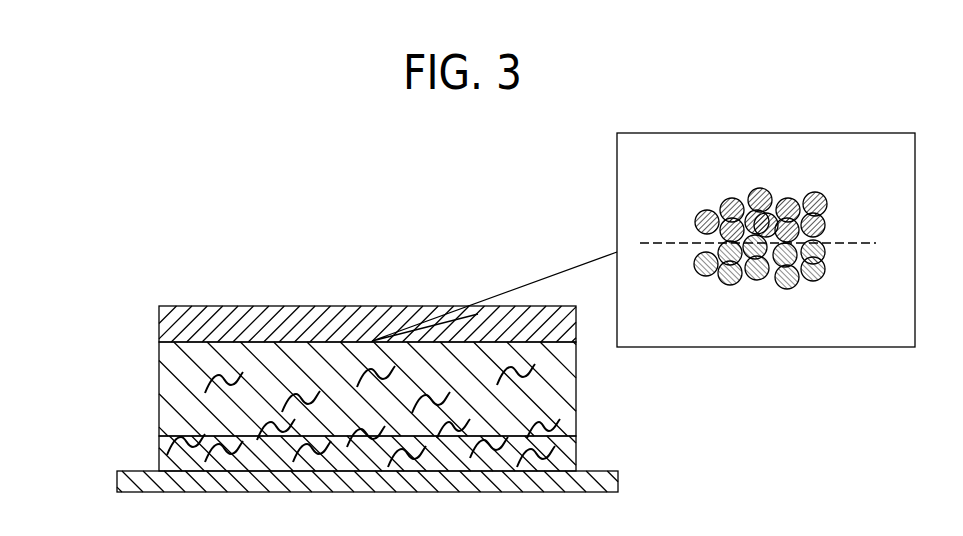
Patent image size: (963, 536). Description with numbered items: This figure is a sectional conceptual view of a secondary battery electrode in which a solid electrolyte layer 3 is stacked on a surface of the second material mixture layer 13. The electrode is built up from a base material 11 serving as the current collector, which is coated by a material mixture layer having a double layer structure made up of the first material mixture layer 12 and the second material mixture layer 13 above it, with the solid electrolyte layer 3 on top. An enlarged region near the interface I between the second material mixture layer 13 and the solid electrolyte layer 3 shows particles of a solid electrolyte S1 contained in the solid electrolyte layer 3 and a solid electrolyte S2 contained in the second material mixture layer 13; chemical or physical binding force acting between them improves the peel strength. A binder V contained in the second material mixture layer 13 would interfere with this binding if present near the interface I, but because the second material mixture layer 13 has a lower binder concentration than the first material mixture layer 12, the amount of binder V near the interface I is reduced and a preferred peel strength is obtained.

The solid electrolyte layer 3 is at (159, 325).
The second material mixture layer 13 is at (159, 387).
The first material mixture layer 12 is at (159, 452).
The base material 11 is at (117, 483).
The binder V is at (552, 460).
The solid electrolyte S1 is at (829, 207).
The solid electrolyte S2 is at (823, 267).
The interface I is at (765, 244).